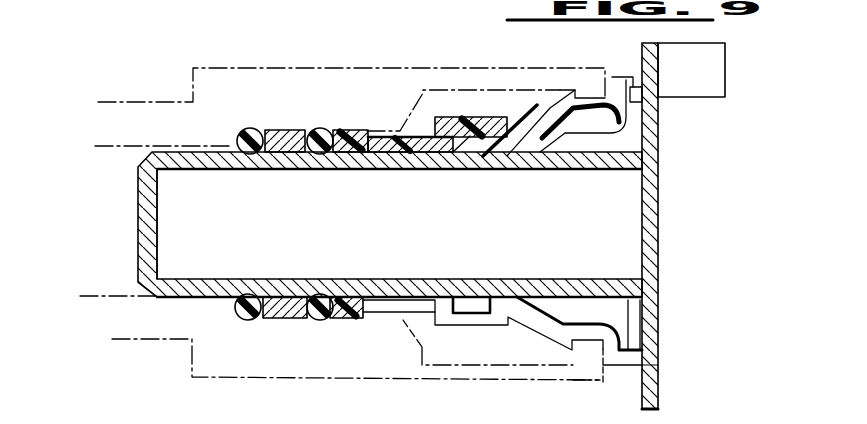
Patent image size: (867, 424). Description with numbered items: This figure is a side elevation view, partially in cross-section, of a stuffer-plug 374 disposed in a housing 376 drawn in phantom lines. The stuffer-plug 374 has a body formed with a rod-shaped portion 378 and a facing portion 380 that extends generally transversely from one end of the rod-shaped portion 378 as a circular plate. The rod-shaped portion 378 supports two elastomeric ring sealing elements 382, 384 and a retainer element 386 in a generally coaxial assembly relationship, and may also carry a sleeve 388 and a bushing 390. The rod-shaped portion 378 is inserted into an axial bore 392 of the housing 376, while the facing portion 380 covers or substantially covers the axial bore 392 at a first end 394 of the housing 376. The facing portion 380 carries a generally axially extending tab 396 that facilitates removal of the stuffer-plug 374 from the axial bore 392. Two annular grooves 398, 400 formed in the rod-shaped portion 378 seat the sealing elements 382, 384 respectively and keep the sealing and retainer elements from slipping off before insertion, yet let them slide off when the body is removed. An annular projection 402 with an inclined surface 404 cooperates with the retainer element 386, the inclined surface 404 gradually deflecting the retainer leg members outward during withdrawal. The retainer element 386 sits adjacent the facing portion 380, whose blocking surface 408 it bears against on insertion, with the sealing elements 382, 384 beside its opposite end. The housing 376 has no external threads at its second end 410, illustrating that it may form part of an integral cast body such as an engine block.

The stuffer-plug 374 is at (411, 173).
The housing 376 is at (362, 78).
The rod-shaped portion 378 is at (541, 170).
The facing portion 380 is at (653, 330).
The sealing element 382 is at (252, 162).
The sealing element 384 is at (307, 160).
The retainer element 386 is at (595, 113).
The sleeve 388 is at (278, 158).
The bushing 390 is at (348, 296).
The axial bore 392 is at (458, 357).
The first end 394 is at (595, 375).
The tab 396 is at (707, 57).
The annular groove 398 is at (245, 298).
The annular groove 400 is at (312, 298).
The annular projection 402 is at (463, 158).
The inclined surface 404 is at (464, 306).
The blocking surface 408 is at (648, 378).
The second end 410 is at (142, 100).